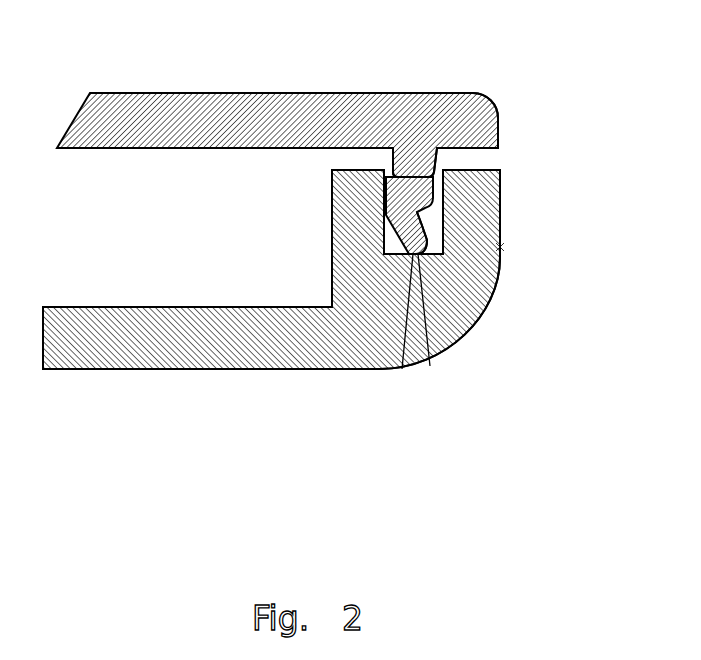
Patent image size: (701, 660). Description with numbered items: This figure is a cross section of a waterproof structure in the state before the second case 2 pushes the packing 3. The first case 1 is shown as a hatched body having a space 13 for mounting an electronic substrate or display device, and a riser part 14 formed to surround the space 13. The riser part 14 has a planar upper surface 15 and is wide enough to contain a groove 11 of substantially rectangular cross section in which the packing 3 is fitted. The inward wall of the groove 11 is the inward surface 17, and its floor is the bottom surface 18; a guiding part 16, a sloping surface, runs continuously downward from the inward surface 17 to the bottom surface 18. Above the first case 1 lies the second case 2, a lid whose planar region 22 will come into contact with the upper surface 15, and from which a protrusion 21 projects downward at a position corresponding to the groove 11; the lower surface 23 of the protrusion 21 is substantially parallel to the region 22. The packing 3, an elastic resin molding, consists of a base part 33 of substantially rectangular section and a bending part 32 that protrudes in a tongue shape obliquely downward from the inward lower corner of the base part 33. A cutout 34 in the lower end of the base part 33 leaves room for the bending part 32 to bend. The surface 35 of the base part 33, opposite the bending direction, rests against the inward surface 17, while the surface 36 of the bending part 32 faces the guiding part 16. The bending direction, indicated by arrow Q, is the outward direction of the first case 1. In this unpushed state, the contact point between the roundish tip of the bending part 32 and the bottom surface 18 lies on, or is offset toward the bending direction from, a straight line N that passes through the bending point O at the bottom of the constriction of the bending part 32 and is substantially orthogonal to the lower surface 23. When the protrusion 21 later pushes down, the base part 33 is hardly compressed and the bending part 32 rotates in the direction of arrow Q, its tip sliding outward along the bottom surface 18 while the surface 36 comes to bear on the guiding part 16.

The first case 1 is at (172, 385).
The second case 2 is at (162, 92).
The packing 3 is at (490, 188).
The groove 11 is at (386, 212).
The space 13 is at (105, 241).
The riser part 14 is at (501, 246).
The upper surface of the riser part 15 is at (473, 165).
The guiding part 16 is at (385, 240).
The inward surface of the groove 17 is at (384, 197).
The bottom surface of the groove 18 is at (478, 317).
The protrusion 21 is at (443, 155).
The region 22 is at (342, 150).
The lower surface of the protrusion 23 is at (393, 162).
The bending part 32 is at (410, 236).
The base part 33 is at (500, 120).
The cutout 34 is at (441, 197).
The surface of the base part 35 is at (388, 178).
The surface of the bending part 36 is at (386, 218).
The straight line N is at (402, 370).
The arrow Q (bending direction) Q is at (508, 447).
The bending point O is at (483, 253).